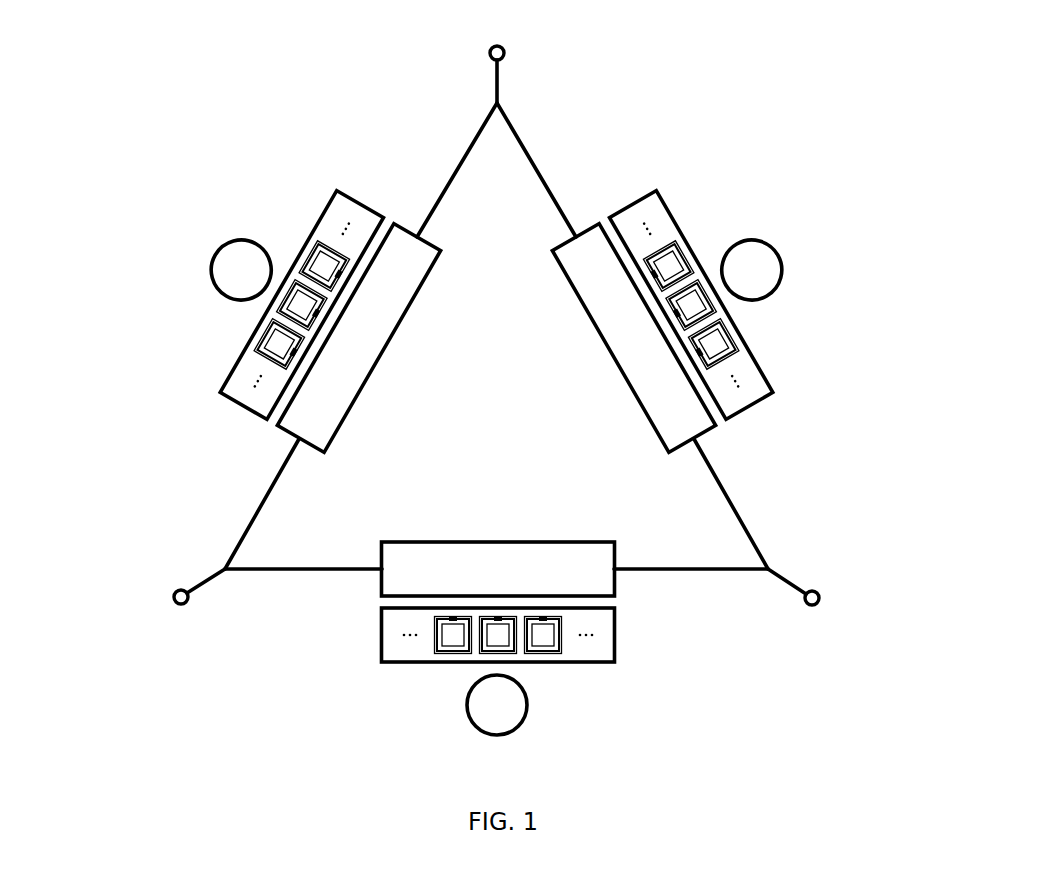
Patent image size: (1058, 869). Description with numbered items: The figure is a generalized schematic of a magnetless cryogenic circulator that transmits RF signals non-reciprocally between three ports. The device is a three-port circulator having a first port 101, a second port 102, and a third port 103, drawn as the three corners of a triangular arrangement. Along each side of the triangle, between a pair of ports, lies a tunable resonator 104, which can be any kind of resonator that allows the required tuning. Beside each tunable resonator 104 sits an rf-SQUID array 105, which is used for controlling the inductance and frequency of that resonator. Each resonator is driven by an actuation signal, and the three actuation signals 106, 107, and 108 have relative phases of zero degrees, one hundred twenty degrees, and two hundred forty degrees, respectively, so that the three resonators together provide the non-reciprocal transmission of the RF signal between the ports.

The first port 101 is at (163, 607).
The second port 102 is at (836, 607).
The third port 103 is at (519, 45).
The tunable resonator 104 is at (432, 280).
The rf-SQUID array 105 is at (206, 398).
The actuation signal 106 is at (247, 228).
The actuation signal 107 is at (741, 228).
The actuation signal 108 is at (452, 705).